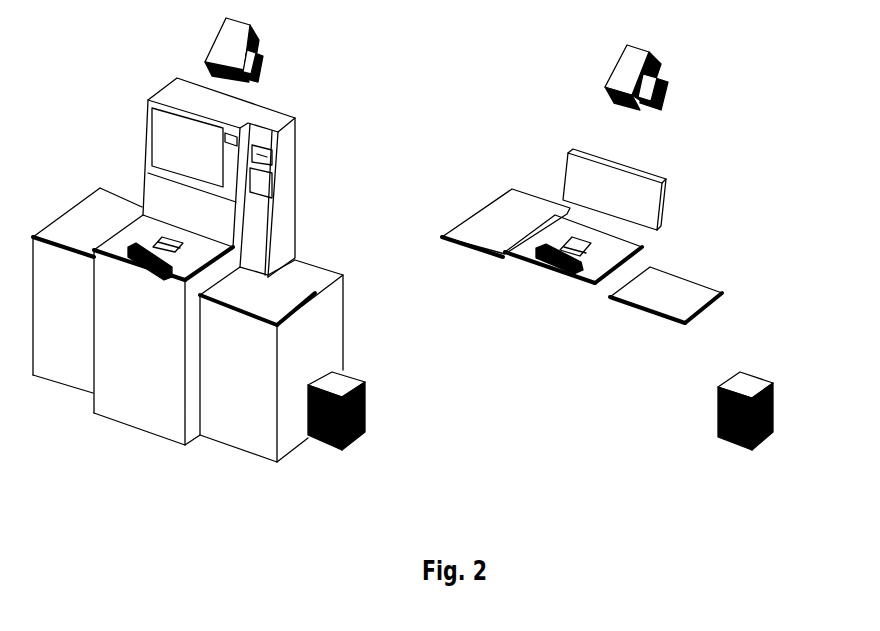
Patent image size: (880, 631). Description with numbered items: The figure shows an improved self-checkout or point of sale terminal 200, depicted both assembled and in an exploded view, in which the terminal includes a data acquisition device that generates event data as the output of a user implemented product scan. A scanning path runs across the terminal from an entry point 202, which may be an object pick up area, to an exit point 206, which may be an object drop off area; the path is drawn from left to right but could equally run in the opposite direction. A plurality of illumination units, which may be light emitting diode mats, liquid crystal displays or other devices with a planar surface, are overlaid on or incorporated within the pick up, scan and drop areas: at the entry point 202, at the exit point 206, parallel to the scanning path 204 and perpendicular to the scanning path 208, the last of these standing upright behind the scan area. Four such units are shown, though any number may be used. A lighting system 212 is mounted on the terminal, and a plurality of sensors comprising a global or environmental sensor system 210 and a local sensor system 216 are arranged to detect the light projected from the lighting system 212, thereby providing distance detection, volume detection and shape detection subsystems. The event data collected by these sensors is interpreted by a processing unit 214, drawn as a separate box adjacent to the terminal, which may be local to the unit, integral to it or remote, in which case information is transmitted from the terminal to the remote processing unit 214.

The POS terminal 200 is at (100, 135).
The entry point 202 is at (67, 220).
The illumination unit parallel to the scanning path 204 is at (177, 273).
The exit point 206 is at (282, 302).
The illumination unit perpendicular to the scanning path 208 is at (215, 220).
The global or environmental sensor system 210 is at (258, 42).
The lighting system 212 is at (257, 72).
The processing unit 214 is at (365, 418).
The local sensor system 216 is at (130, 268).